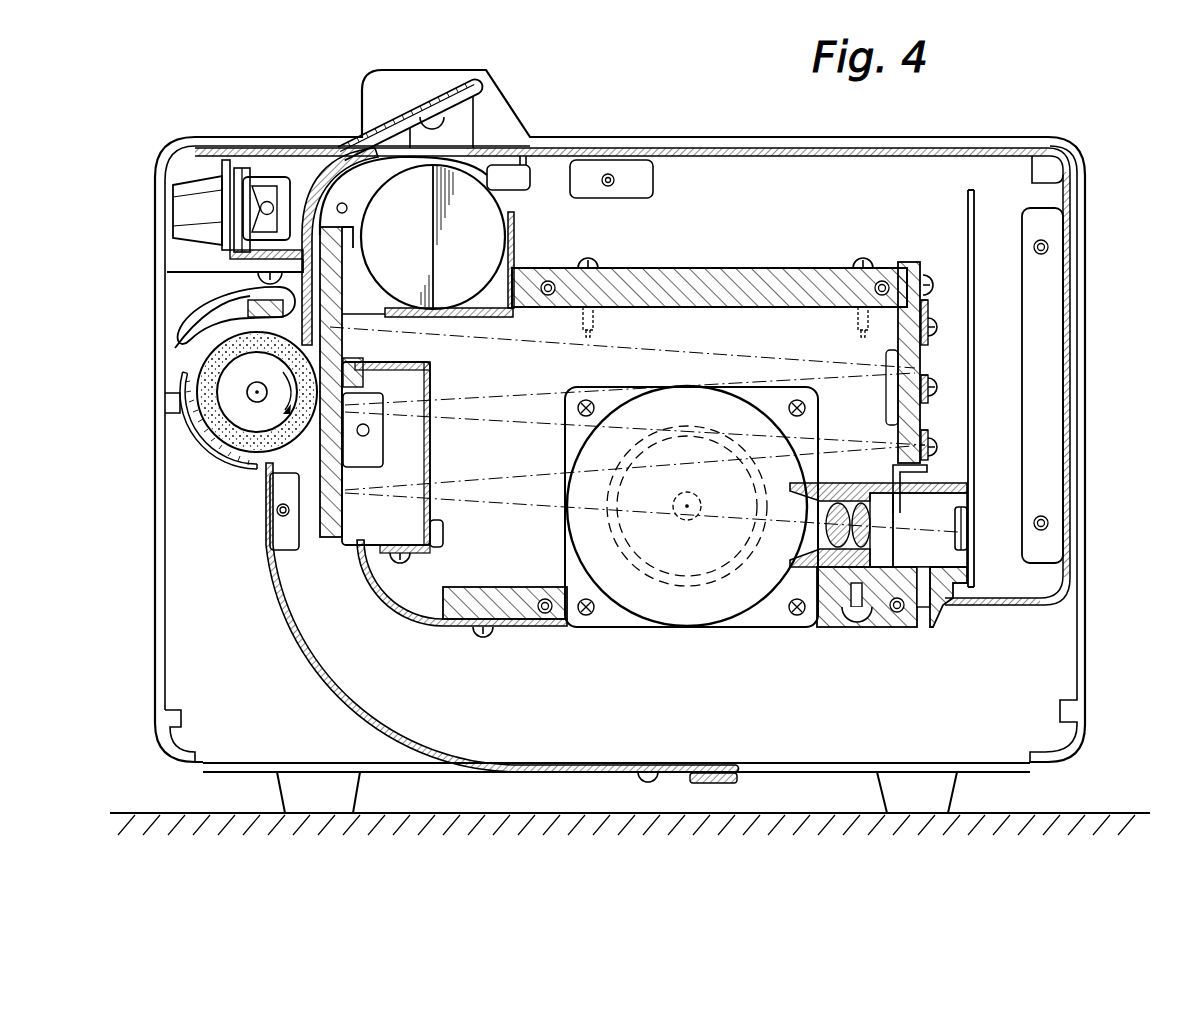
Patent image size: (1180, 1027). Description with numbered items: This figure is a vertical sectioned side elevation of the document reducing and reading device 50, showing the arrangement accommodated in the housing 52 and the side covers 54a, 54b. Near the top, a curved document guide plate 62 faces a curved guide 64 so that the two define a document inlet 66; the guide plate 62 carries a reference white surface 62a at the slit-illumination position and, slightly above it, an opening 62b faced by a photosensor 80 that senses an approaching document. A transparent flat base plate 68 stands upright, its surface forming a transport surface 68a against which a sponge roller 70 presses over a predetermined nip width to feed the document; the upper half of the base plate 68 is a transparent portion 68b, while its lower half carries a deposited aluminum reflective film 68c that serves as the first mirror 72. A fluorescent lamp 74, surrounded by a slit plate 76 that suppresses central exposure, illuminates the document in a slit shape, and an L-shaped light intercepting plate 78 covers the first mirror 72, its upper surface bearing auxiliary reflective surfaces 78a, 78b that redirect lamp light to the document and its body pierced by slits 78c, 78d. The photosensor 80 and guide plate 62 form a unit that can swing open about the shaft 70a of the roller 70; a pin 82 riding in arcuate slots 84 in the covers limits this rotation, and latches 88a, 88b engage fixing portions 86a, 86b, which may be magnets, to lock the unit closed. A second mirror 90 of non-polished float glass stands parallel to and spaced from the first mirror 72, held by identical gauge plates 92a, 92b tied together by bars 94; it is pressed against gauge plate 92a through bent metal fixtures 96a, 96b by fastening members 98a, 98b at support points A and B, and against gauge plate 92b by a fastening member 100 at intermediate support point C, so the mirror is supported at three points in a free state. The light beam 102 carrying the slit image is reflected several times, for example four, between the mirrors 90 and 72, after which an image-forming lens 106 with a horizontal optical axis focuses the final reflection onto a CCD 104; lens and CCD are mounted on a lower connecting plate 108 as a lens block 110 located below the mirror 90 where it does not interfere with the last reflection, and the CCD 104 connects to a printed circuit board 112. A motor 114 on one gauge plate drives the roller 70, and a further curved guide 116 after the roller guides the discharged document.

The document reducing and reading device 50 is at (1101, 144).
The housing 52 is at (1052, 603).
The cover 54a is at (1102, 454).
The cover 54b is at (1087, 680).
The curved document guide plate 62 is at (308, 190).
The reference white surface 62a is at (345, 326).
The opening 62b is at (335, 310).
The curved guide 64 is at (410, 157).
The document inlet 66 is at (397, 140).
The transparent flat base plate 68 is at (329, 470).
The transport surface 68a is at (343, 277).
The transparent portion 68b is at (363, 247).
The reflective film 68c is at (300, 474).
The sponge roller 70 is at (247, 392).
The shaft 70a is at (185, 393).
The first mirror 72 is at (337, 537).
The fluorescent lamp 74 is at (497, 170).
The slit plate 76 is at (520, 226).
The light intercepting plate 78 is at (444, 454).
The auxiliary reflective surface 78a is at (436, 366).
The auxiliary reflective surface 78b is at (353, 372).
The slit 78c is at (427, 400).
The slit 78d is at (428, 508).
The photosensor 80 is at (245, 310).
The pin 82 is at (262, 300).
The arcuate slots 84 is at (185, 340).
The fixing portion 86a is at (289, 154).
The fixing portion 86b is at (265, 190).
The latch 88a is at (212, 172).
The latch 88b is at (192, 205).
The second mirror 90 is at (897, 263).
The gauge plate 92a is at (725, 264).
The gauge plate 92b is at (768, 330).
The bars 94 is at (703, 268).
The bent metal fixture 96a is at (922, 267).
The bent metal fixture 96b is at (940, 470).
The fastening member 98a is at (943, 328).
The fastening member 98b is at (940, 446).
The fastening member 100 is at (940, 388).
The light beam 102 is at (657, 350).
The photoelectric transducer (CCD) 104 is at (966, 530).
The image-forming lens 106 is at (833, 632).
The lower connecting plate 108 is at (525, 628).
The lens block 110 is at (882, 630).
The printed circuit board 112 is at (975, 462).
The motor 114 is at (683, 612).
The curved guide 116 is at (342, 695).
The support point A is at (947, 310).
The support point B is at (940, 432).
The intermediate support point C is at (945, 381).